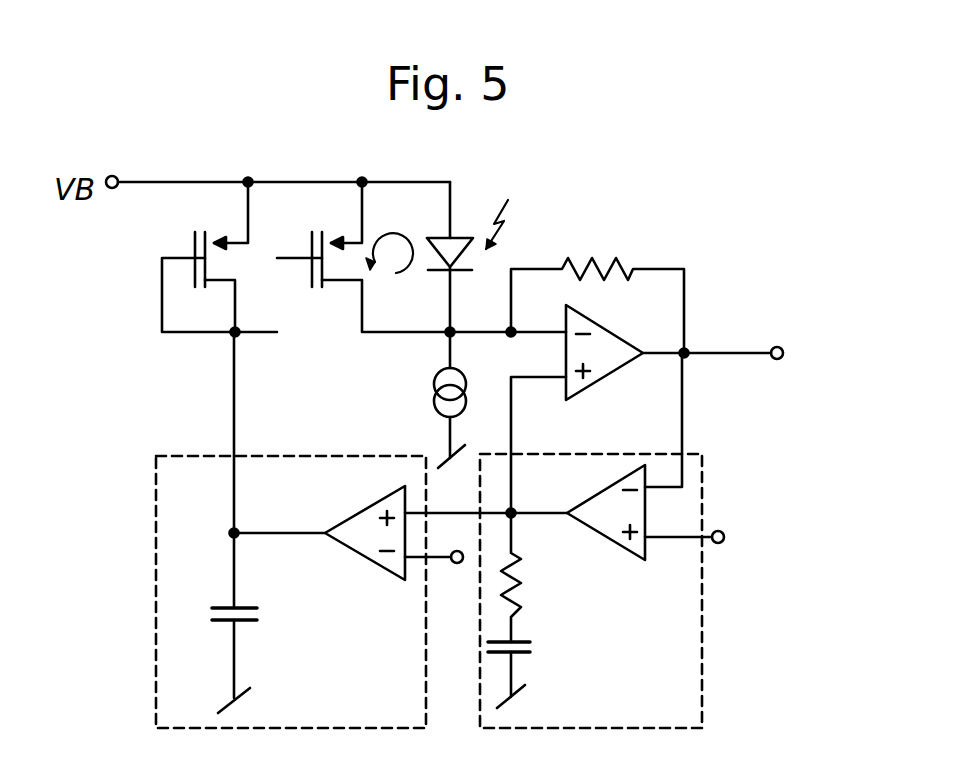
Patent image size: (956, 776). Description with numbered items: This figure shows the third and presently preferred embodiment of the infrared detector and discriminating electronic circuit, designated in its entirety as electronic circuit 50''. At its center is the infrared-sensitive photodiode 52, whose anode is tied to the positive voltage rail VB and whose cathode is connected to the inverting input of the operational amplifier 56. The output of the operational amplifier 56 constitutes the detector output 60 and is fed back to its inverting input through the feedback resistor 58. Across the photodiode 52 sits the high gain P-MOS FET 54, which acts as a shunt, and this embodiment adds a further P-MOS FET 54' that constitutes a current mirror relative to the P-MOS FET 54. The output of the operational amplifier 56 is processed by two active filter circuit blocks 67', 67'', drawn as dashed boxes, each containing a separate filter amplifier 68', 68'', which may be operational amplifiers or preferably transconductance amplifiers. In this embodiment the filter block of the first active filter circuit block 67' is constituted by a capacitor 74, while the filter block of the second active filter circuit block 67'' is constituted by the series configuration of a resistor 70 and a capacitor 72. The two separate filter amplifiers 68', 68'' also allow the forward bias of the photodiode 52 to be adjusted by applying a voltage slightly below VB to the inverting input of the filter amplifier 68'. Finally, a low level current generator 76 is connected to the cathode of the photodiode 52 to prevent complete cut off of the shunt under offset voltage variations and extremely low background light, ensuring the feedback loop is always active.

The electronic circuit 50'' is at (777, 252).
The photodiode 52 is at (453, 234).
The P-MOS FET 54 is at (394, 260).
The further P-MOS FET 54' is at (200, 257).
The operational amplifier 56 is at (609, 366).
The feedback resistor 58 is at (603, 258).
The detector output 60 is at (777, 360).
The active filter circuit block 67' is at (287, 567).
The active filter circuit block 67'' is at (636, 591).
The filter amplifier 68' is at (400, 552).
The filter amplifier 68'' is at (631, 456).
The resistor 70 is at (521, 590).
The capacitor 72 is at (530, 655).
The capacitor 74 is at (229, 622).
The low level current generator 76 is at (432, 400).